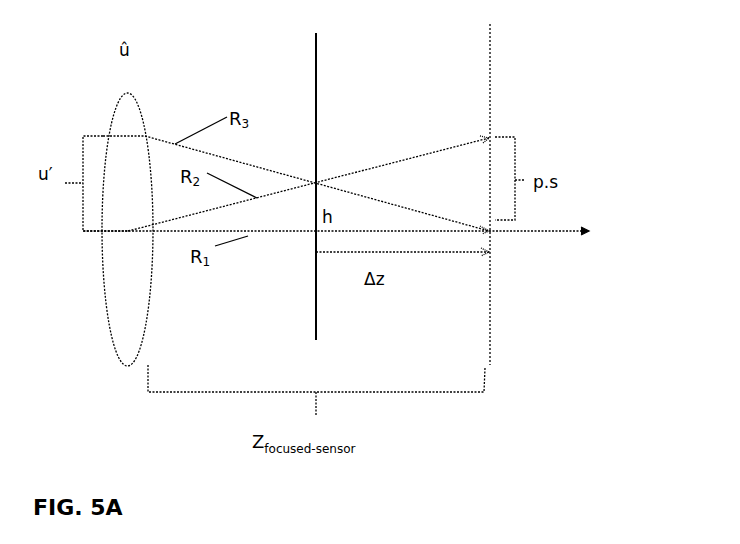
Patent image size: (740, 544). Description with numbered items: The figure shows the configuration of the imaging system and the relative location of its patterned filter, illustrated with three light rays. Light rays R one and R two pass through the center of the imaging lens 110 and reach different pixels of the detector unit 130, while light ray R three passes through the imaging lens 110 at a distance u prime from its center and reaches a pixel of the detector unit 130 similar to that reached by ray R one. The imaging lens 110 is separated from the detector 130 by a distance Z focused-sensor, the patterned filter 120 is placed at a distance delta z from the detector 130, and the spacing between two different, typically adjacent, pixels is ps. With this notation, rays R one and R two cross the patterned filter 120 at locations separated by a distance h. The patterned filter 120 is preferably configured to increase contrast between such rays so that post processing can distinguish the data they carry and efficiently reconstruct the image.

The imaging lens 110 is at (108, 307).
The patterned filter 120 is at (318, 290).
The detector unit 130 is at (490, 290).